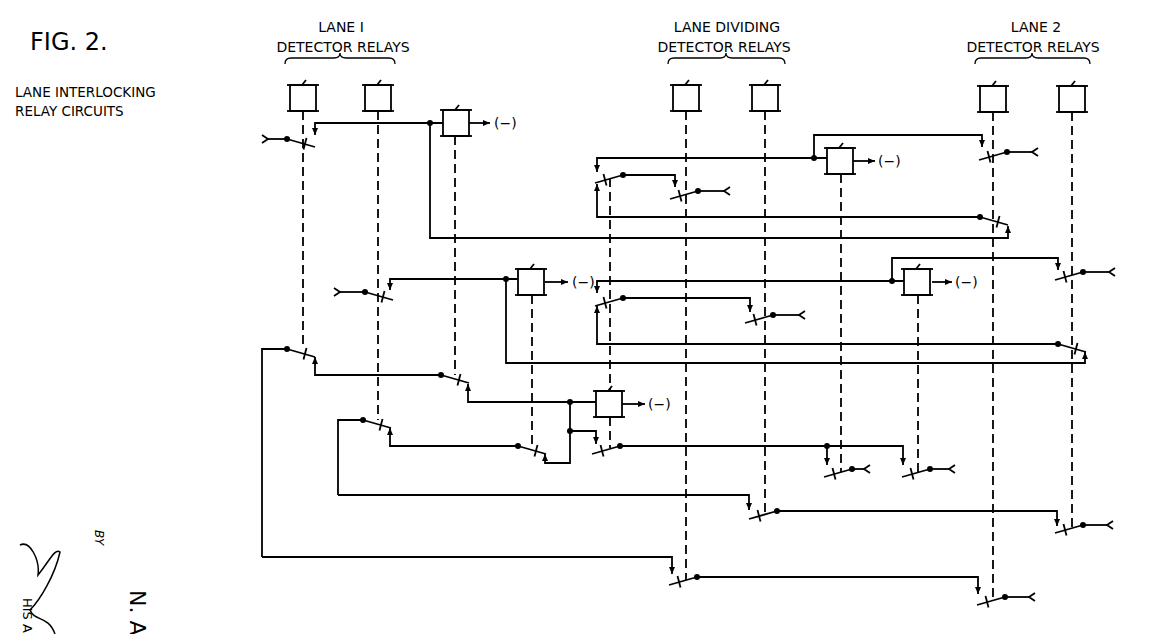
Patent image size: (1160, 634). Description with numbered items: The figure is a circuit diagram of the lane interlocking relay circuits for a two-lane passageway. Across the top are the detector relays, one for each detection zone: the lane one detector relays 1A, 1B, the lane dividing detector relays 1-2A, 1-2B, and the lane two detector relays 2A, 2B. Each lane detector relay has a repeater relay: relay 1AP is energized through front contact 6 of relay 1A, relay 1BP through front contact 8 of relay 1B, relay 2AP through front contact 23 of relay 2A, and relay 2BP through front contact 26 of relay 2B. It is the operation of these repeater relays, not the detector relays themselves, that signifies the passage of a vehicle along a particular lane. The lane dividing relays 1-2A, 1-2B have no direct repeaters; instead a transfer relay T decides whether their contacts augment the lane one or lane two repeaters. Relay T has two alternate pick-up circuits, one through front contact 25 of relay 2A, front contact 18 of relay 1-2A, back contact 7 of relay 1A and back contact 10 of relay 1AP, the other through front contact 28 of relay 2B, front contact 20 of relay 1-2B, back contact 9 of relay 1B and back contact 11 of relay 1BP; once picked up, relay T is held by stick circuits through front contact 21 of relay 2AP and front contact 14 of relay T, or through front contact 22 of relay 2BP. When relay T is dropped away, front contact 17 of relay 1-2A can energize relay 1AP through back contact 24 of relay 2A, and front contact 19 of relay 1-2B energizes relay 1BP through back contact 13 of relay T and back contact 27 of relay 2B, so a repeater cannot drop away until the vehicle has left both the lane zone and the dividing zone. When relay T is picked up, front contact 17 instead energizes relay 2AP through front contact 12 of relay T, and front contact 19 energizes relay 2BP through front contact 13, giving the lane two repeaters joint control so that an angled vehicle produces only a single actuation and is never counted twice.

The detector relay 1A is at (303, 89).
The detector relay 1B is at (378, 89).
The repeater relay 1AP is at (456, 114).
The repeater relay 1BP is at (531, 273).
The lane dividing detector relay 1-2A is at (685, 89).
The lane dividing detector relay 1-2B is at (763, 89).
The detector relay 2A is at (993, 89).
The detector relay 2B is at (1072, 89).
The repeater relay 2AP is at (826, 169).
The repeater relay 2BP is at (901, 291).
The transfer relay T is at (609, 395).
The front contact 6 is at (305, 145).
The back contact 7 is at (312, 355).
The front contact 8 is at (389, 302).
The back contact 9 is at (385, 425).
The back contact 10 is at (463, 381).
The back contact 11 is at (529, 450).
The front contact 12 is at (611, 180).
The contact 13 is at (611, 303).
The front contact 14 is at (612, 450).
The front contact 17 is at (688, 196).
The front contact 18 is at (688, 582).
The front contact 19 is at (765, 320).
The front contact 20 is at (763, 516).
The front contact 21 is at (842, 474).
The front contact 22 is at (920, 474).
The front contact 23 is at (995, 158).
The back contact 24 is at (996, 223).
The front contact 25 is at (996, 603).
The front contact 26 is at (1072, 278).
The back contact 27 is at (1076, 348).
The front contact 28 is at (1075, 531).